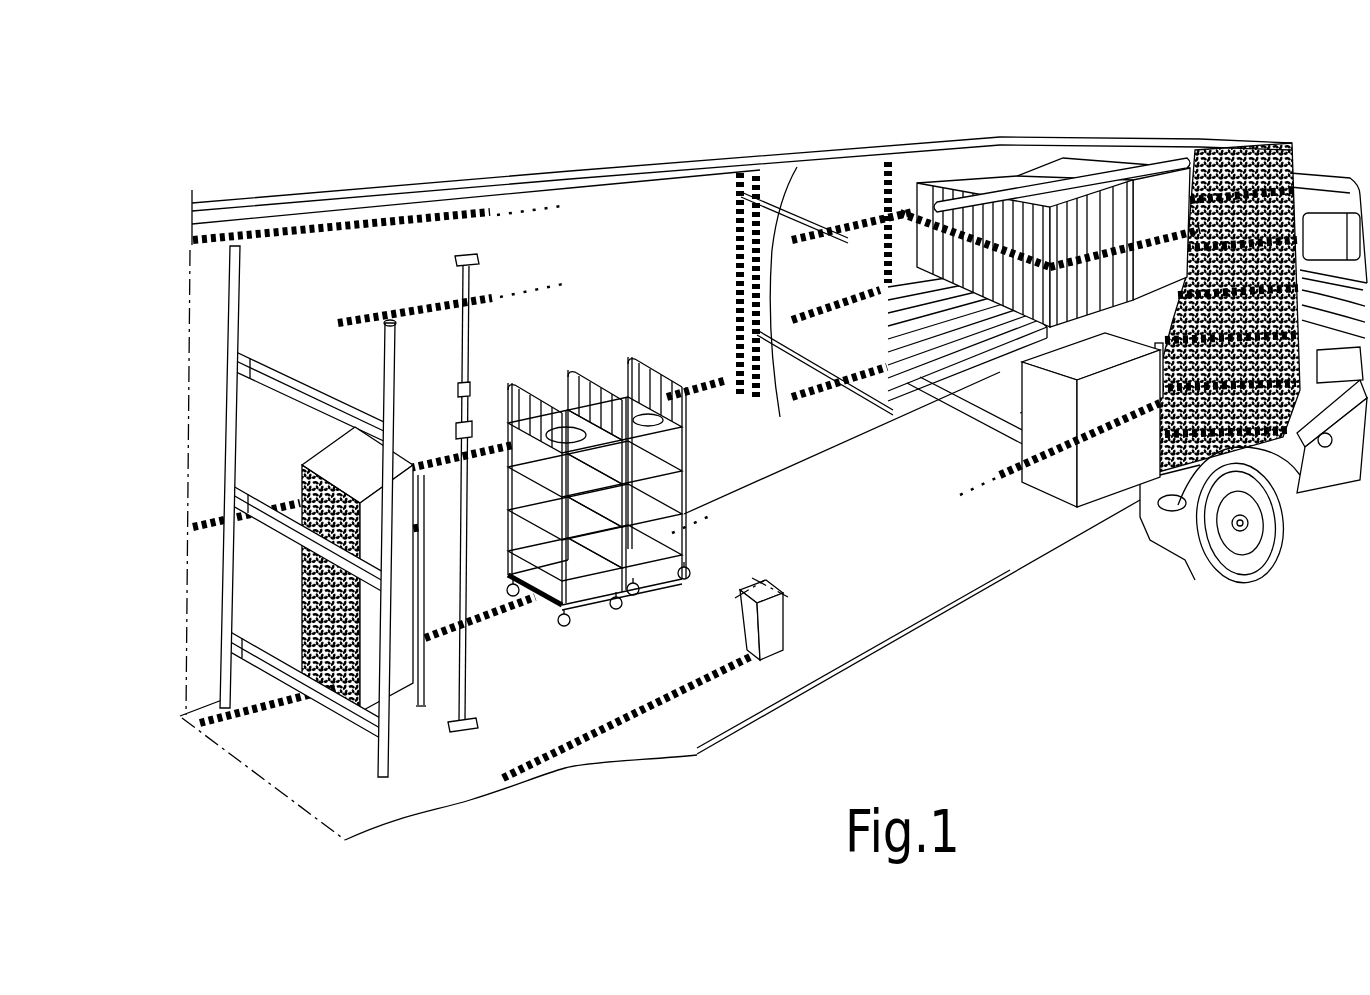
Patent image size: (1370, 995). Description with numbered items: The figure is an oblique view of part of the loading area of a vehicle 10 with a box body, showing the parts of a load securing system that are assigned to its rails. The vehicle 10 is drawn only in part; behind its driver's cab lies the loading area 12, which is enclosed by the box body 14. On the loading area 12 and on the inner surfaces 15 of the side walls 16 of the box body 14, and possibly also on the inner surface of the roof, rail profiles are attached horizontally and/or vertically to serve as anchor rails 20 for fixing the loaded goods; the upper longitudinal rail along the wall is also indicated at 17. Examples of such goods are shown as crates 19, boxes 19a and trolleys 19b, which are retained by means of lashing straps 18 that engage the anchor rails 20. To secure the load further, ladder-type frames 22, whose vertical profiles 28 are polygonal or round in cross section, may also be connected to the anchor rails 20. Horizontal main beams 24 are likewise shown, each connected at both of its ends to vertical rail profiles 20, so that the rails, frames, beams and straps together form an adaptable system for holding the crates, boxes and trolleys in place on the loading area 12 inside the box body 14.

The vehicle 10 is at (158, 401).
The loading area 12 is at (950, 594).
The box body 14 is at (171, 651).
The inner surfaces 15 is at (692, 221).
The side walls 16 is at (292, 252).
The roof rail 17 is at (597, 186).
The lashing straps 18 is at (416, 468).
The crates 19 is at (1058, 170).
The boxes 19a is at (407, 668).
The trolleys 19b is at (523, 383).
The anchor rails 20 is at (433, 307).
The ladder-type frames 22 is at (303, 710).
The horizontal main beams 24 is at (787, 311).
The vertical profiles 28 is at (234, 314).